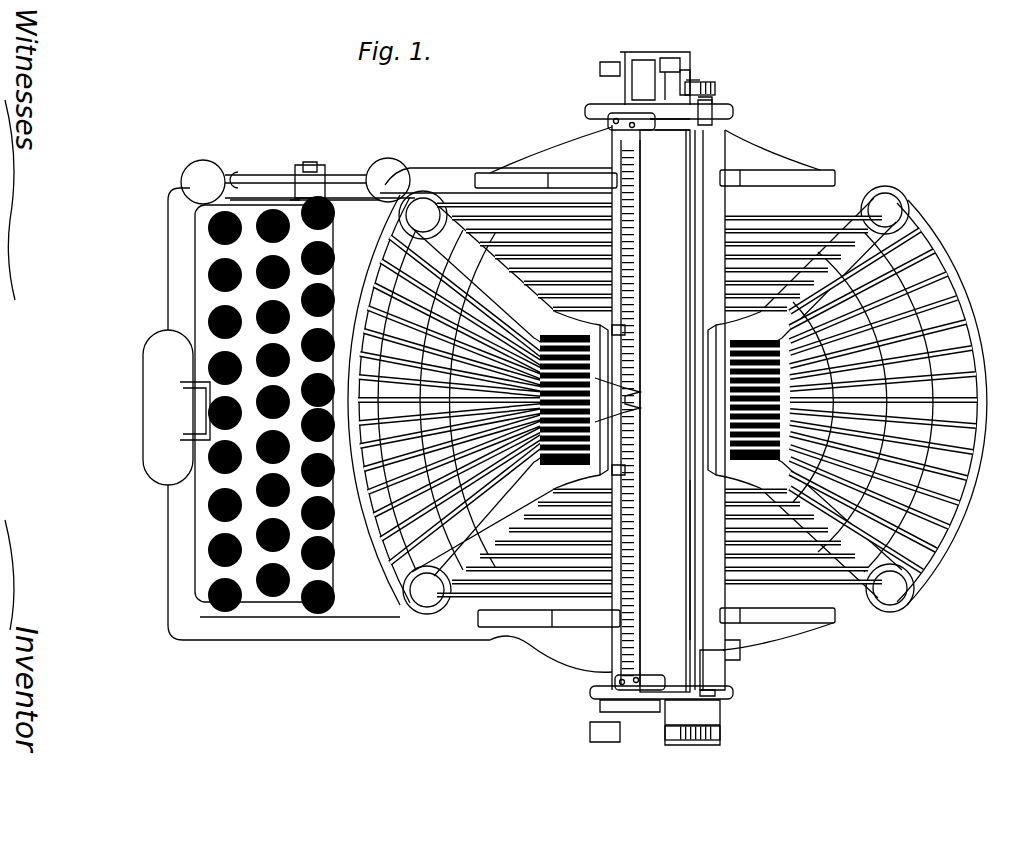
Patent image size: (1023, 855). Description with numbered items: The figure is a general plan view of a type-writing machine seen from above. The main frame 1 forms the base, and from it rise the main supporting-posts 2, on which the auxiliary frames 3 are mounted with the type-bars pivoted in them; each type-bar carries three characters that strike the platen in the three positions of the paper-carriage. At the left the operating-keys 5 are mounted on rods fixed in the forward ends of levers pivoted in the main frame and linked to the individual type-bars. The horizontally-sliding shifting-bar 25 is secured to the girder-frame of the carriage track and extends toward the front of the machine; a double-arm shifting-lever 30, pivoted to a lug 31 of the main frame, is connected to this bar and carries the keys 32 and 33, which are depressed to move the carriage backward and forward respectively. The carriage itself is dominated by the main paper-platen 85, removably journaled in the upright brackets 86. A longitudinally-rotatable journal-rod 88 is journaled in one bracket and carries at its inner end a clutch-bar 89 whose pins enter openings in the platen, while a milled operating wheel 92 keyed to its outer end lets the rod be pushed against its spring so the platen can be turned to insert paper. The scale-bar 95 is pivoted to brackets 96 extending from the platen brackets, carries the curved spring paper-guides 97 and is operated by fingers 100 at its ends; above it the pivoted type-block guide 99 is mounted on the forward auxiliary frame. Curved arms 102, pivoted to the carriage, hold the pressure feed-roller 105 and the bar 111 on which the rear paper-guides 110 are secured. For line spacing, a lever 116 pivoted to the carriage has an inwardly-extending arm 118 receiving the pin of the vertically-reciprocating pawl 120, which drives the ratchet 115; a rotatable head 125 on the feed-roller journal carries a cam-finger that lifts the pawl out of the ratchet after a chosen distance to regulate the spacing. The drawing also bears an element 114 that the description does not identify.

The main frame 1 is at (775, 162).
The main supporting-posts 2 is at (423, 215).
The auxiliary frames 3 is at (470, 230).
The operating-keys 5 is at (258, 515).
The shifting-bar 25 is at (455, 180).
The shifting-lever 30 is at (253, 183).
The lug 31 is at (305, 185).
The key 32 is at (200, 185).
The key 33 is at (385, 180).
The main paper-platen 85 is at (665, 411).
The upright brackets 86 is at (688, 80).
The journal-rod 88 is at (650, 658).
The clutch-bar 89 is at (680, 650).
The milled operating wheel 92 is at (685, 740).
The scale-bar 95 is at (639, 407).
The brackets 96 is at (600, 108).
The curved spring paper-guides 97 is at (557, 180).
The type-block guide 99 is at (640, 385).
The operating-fingers 100 is at (660, 115).
The curved arms 102 is at (728, 113).
The pressure feed-roller 105 is at (705, 556).
The rear paper-guides 110 is at (810, 172).
The bar 111 is at (725, 650).
The lever 114 is at (661, 79).
The ratchet 115 is at (712, 125).
The lever 116 is at (665, 75).
The inwardly-extending arm 118 is at (708, 90).
The vertically-reciprocating pawl 120 is at (668, 130).
The rotatable head 125 is at (715, 95).